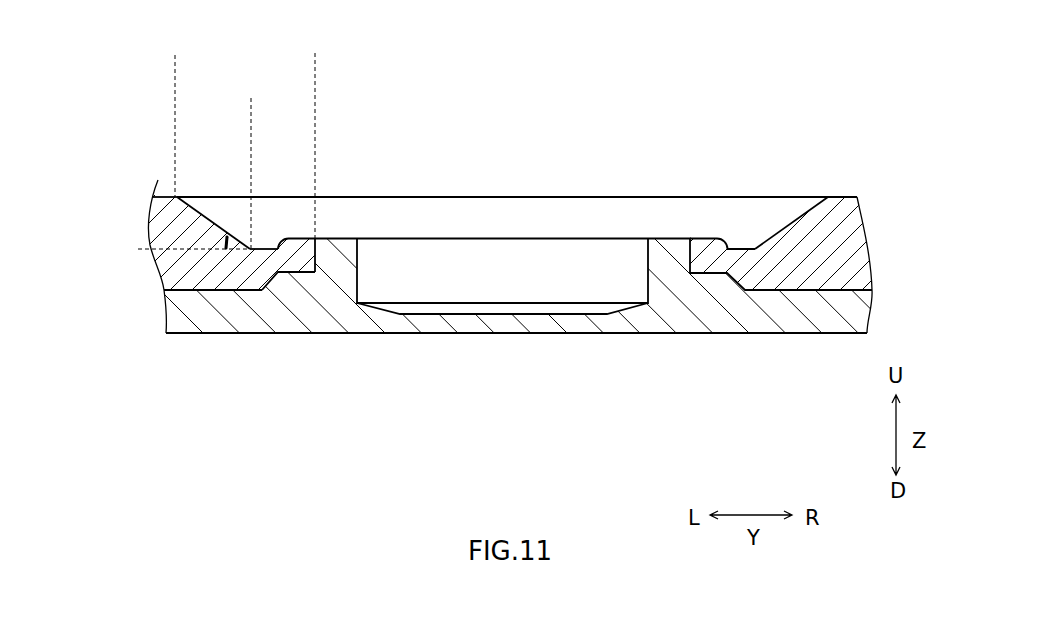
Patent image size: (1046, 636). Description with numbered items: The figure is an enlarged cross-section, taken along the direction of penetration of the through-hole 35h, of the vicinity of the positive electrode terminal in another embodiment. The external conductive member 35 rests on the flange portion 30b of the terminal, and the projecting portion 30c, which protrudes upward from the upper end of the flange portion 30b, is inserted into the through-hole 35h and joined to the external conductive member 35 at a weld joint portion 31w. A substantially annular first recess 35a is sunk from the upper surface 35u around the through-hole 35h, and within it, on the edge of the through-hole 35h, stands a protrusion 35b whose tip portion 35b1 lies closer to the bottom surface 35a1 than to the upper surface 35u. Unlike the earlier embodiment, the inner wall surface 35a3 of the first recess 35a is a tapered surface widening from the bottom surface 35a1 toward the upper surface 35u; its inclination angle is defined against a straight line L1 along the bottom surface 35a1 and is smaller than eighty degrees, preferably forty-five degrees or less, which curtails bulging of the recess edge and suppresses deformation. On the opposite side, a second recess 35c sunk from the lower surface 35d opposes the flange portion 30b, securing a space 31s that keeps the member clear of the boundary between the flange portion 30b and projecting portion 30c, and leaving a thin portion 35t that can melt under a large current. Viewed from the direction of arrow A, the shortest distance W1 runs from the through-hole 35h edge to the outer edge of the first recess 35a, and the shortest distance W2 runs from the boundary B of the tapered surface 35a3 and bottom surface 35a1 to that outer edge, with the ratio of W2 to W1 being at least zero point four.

The flange portion 30b is at (227, 302).
The projecting portion 30c is at (673, 238).
The space 31s is at (718, 282).
The joint portion 31w is at (692, 240).
The external conductive member 35 is at (151, 282).
The first recess 35a is at (340, 208).
The bottom surface 35a1 is at (262, 247).
The inner wall surface (tapered surface) 35a3 is at (162, 197).
The protrusion 35b is at (327, 248).
The tip portion 35b1 is at (300, 237).
The second recess 35c is at (282, 284).
The lower surface 35d is at (845, 270).
The through-hole 35h is at (338, 254).
The thin portion 35t is at (746, 258).
The upper surface 35u is at (158, 184).
The boundary B is at (226, 236).
The straight line L1 is at (143, 252).
The shortest distance W1 is at (307, 76).
The shortest distance W2 is at (243, 118).
The arrow A is at (351, 70).